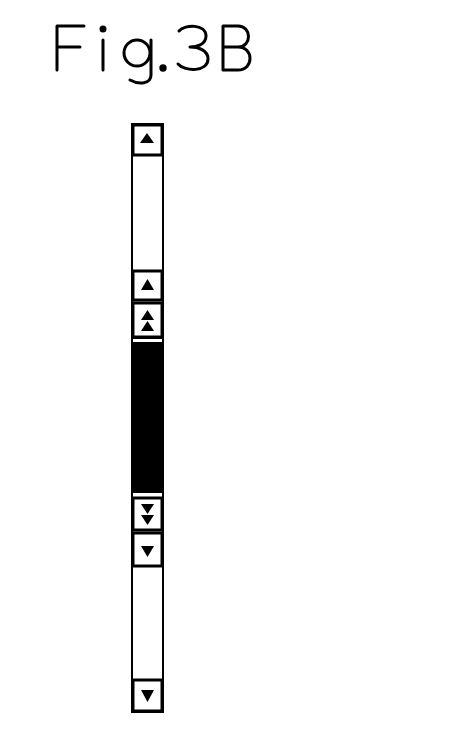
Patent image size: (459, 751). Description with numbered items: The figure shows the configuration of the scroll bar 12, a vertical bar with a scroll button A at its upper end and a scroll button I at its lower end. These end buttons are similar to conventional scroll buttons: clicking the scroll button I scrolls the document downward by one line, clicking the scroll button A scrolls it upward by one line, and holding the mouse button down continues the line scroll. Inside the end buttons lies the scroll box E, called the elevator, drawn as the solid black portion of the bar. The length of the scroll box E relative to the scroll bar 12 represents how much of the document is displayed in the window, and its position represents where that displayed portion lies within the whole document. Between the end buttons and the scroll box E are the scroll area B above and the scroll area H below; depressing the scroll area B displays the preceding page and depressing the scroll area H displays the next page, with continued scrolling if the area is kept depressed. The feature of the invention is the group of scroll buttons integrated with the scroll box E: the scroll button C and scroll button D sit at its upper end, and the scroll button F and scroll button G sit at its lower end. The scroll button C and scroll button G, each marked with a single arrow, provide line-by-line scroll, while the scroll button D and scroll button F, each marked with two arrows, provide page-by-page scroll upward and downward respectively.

The scroll bar 12 is at (258, 237).
The scroll button A is at (162, 140).
The scroll area B is at (161, 213).
The scroll button C is at (162, 287).
The scroll button D is at (163, 321).
The scroll box E is at (161, 418).
The scroll button F is at (160, 514).
The scroll button G is at (163, 550).
The scroll area H is at (162, 623).
The scroll button I is at (158, 696).